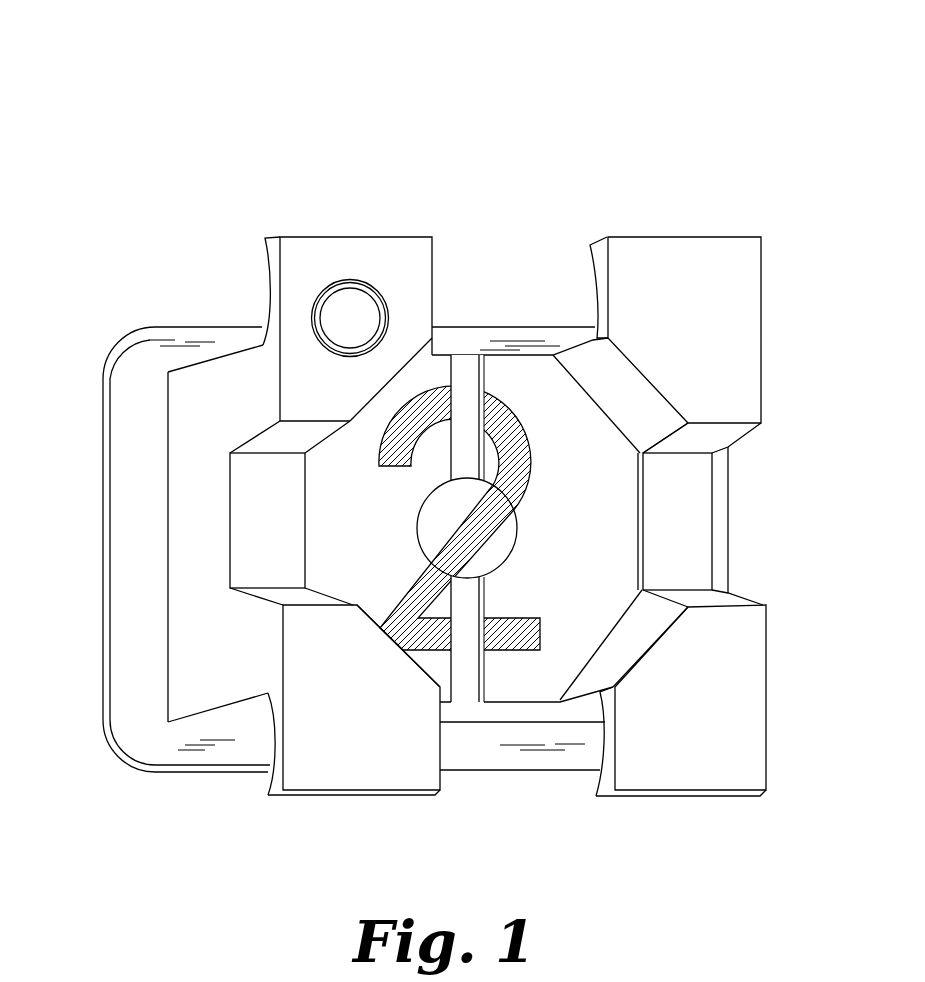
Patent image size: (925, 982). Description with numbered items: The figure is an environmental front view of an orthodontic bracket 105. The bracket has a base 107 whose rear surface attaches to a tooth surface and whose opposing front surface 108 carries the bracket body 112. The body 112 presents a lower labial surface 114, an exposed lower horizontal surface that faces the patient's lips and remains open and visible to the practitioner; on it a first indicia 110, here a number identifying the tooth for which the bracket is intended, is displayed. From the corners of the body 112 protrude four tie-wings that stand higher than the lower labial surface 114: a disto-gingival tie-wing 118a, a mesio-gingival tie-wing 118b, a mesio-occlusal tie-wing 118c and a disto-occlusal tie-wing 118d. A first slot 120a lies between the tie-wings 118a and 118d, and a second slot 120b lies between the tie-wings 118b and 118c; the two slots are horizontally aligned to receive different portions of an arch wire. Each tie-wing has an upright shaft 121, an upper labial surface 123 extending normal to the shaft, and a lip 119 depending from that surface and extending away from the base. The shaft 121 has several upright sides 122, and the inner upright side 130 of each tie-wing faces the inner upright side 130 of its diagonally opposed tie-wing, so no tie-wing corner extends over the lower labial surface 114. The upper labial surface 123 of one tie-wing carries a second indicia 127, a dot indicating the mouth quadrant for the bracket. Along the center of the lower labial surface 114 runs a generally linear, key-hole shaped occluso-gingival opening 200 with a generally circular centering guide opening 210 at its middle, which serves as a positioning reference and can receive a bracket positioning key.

The orthodontic bracket 105 is at (113, 60).
The base 107 is at (175, 327).
The front surface 108 is at (160, 606).
The first indicia 110 is at (533, 432).
The bracket body 112 is at (716, 556).
The lower labial surface 114 is at (597, 521).
The disto-gingival tie-wing 118a is at (356, 285).
The mesio-gingival tie-wing 118b is at (681, 210).
The mesio-occlusal tie-wing 118c is at (788, 672).
The disto-occlusal tie-wing 118d is at (377, 590).
The lip 119 is at (265, 250).
The first slot 120a is at (222, 498).
The second slot 120b is at (722, 527).
The upright shaft 121 is at (227, 330).
The upright sides 122 is at (247, 713).
The upper labial surface 123 is at (352, 394).
The second indicia 127 is at (372, 331).
The inner upright side 130 is at (638, 406).
The occluso-gingival opening 200 is at (480, 716).
The centering guide opening 210 is at (450, 517).